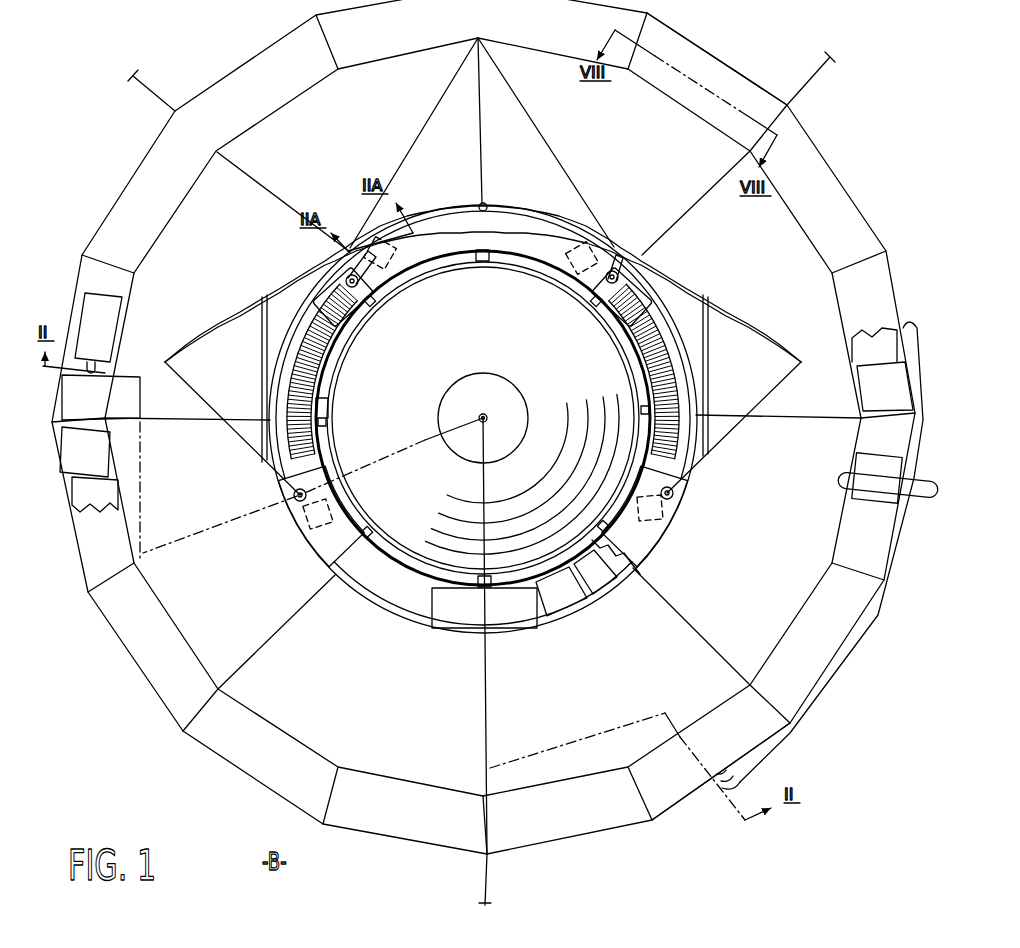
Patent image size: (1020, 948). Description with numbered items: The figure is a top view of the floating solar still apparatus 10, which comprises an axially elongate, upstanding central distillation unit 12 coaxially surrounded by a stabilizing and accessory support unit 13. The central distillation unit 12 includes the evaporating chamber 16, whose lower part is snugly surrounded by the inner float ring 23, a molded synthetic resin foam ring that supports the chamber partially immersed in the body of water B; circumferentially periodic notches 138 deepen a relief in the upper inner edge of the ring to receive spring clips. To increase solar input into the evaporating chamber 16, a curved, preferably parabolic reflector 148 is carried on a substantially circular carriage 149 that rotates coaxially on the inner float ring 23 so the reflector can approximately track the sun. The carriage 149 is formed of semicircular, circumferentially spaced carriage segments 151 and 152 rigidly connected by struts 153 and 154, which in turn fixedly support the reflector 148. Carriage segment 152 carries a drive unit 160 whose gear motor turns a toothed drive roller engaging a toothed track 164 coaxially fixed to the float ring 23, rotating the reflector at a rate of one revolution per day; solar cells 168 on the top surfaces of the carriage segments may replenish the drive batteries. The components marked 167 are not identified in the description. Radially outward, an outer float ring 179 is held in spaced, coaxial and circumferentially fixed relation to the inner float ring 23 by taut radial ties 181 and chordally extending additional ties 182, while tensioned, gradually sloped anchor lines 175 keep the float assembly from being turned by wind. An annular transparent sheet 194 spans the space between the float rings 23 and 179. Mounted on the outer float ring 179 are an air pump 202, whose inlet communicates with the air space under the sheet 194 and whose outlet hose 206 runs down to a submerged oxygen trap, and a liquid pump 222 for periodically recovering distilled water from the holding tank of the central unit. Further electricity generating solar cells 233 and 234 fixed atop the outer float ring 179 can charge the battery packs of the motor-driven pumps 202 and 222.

The floating solar still apparatus 10 is at (232, 796).
The central distillation unit 12 is at (356, 605).
The stabilizing and accessory support unit 13 is at (166, 713).
The evaporating chamber 16 is at (612, 562).
The inner float ring 23 is at (686, 340).
The notches 138 is at (328, 403).
The reflector 148 is at (237, 296).
The carriage 149 is at (420, 178).
The carriage segment 151 is at (528, 230).
The carriage segment 152 is at (680, 500).
The strut 153 is at (487, 204).
The strut 154 is at (722, 437).
The drive unit 160 is at (502, 630).
The toothed track 164 is at (708, 363).
The pivot pin 167 is at (372, 236).
The solar cells 168 is at (588, 590).
The lines 175 is at (161, 86).
The outer float ring 179 is at (733, 64).
The ties 181 is at (483, 131).
The additional ties 182 is at (430, 116).
The annular transparent sheet 194 is at (780, 602).
The air pump 202 is at (862, 468).
The outlet hose 206 is at (924, 492).
The liquid pump 222 is at (112, 300).
The solar cells 233 is at (870, 383).
The solar cells 234 is at (92, 393).